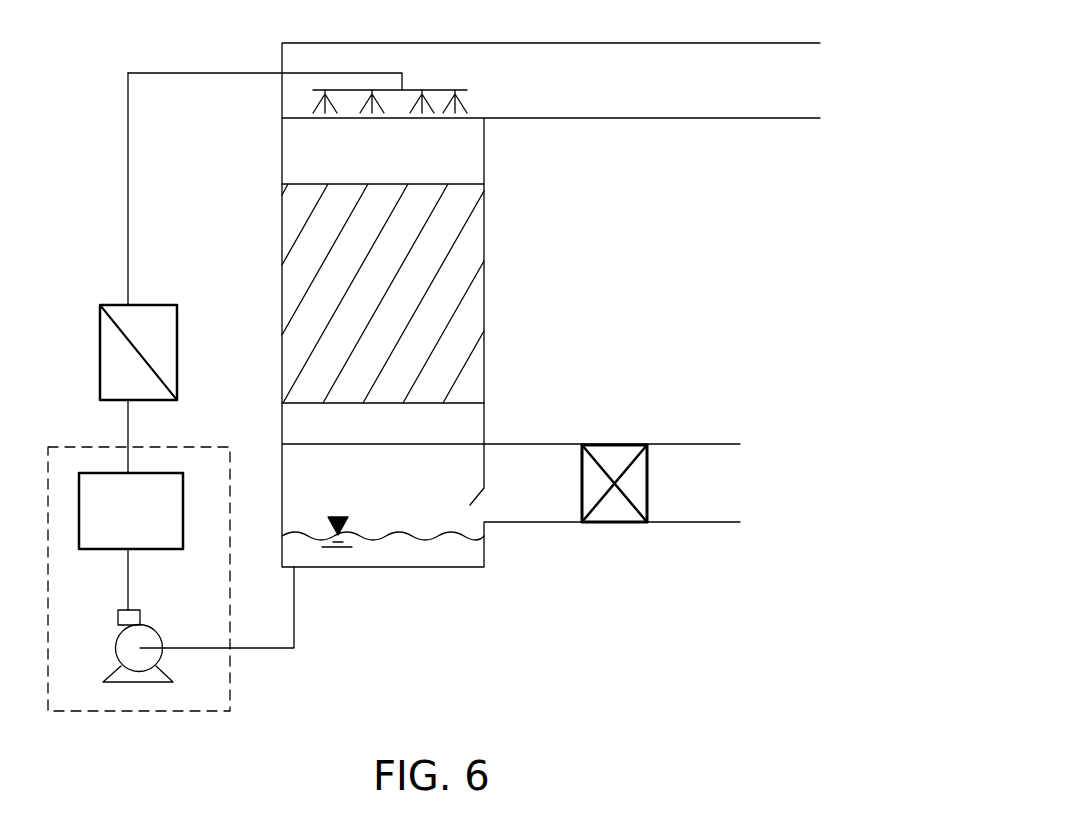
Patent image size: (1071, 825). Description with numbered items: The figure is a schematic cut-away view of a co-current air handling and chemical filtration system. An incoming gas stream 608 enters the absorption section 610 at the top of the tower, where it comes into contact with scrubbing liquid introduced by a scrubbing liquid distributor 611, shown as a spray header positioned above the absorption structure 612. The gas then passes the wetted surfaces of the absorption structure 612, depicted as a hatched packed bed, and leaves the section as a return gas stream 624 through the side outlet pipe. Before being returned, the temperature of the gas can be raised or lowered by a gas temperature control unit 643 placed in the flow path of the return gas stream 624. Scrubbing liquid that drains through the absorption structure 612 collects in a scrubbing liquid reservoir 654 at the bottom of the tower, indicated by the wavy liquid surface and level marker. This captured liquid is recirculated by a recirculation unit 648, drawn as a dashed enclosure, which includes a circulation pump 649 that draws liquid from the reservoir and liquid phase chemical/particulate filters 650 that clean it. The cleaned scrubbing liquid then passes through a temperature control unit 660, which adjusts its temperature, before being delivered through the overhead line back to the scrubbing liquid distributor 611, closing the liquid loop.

The incoming gas stream 608 is at (727, 81).
The absorption section 610 is at (690, 222).
The scrubbing liquid distributor 611 is at (431, 90).
The absorption structure 612 is at (486, 258).
The return gas stream 624 is at (712, 486).
The gas temperature control unit 643 is at (613, 445).
The recirculation unit 648 is at (230, 692).
The circulation pump 649 is at (112, 673).
The liquid phase chemical/particulate filters 650 is at (149, 523).
The scrubbing liquid reservoir 654 is at (435, 560).
The temperature control unit 660 is at (100, 352).